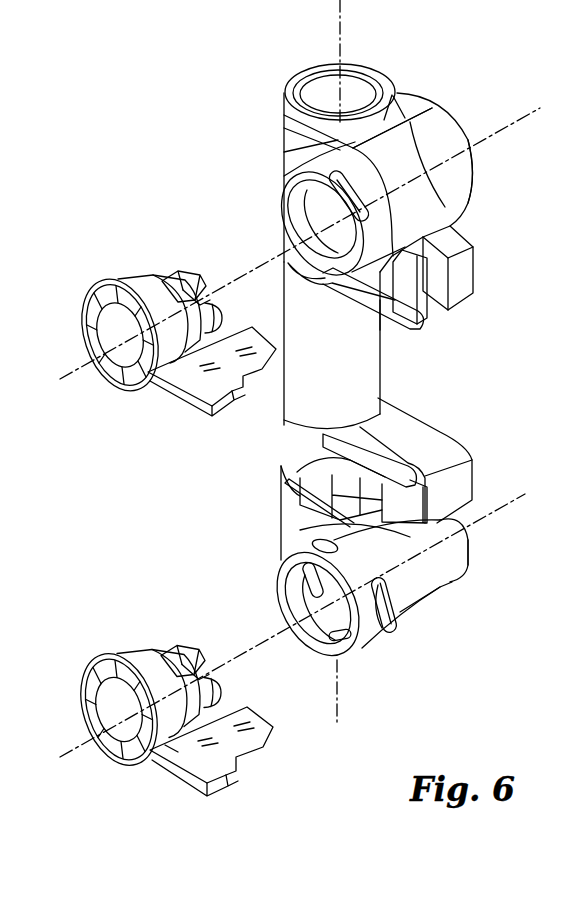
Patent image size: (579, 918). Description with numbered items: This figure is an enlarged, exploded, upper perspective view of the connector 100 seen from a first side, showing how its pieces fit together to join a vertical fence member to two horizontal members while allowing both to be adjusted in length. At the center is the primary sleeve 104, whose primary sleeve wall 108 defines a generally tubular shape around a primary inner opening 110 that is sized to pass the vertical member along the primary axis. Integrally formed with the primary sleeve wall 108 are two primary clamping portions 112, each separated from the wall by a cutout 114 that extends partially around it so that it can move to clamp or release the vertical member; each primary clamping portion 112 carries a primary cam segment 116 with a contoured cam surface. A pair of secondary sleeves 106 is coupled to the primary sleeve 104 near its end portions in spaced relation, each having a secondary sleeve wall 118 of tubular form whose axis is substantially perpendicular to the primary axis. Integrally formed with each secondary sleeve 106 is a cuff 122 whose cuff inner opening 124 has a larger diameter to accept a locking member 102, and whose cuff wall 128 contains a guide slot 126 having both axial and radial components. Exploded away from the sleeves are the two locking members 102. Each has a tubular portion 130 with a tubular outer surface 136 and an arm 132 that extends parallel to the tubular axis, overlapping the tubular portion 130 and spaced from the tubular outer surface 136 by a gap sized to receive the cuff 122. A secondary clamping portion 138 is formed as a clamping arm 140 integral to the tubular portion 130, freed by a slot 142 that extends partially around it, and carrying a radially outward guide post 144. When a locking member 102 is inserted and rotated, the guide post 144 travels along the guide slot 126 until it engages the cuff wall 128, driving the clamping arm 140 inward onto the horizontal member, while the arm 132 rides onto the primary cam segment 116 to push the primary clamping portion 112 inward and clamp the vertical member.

The connector 100 is at (217, 90).
The locking member 102 is at (121, 400).
The primary sleeve 104 is at (357, 389).
The secondary sleeve 106 is at (446, 118).
The primary sleeve wall 108 is at (372, 347).
The primary inner opening 110 is at (325, 98).
The primary clamping portion 112 is at (434, 322).
The cutout 114 is at (440, 292).
The primary cam segment 116 is at (298, 503).
The secondary sleeve wall 118 is at (458, 172).
The cuff 122 is at (398, 152).
The cuff inner opening 124 is at (298, 221).
The guide slot 126 is at (342, 176).
The cuff wall 128 is at (345, 190).
The tubular portion 130 is at (168, 266).
The arm 132 is at (247, 388).
The tubular outer surface 136 is at (156, 281).
The secondary clamping portion 138 is at (180, 287).
The clamping arm 140 is at (205, 311).
The slot 142 is at (184, 752).
The guide post 144 is at (202, 296).